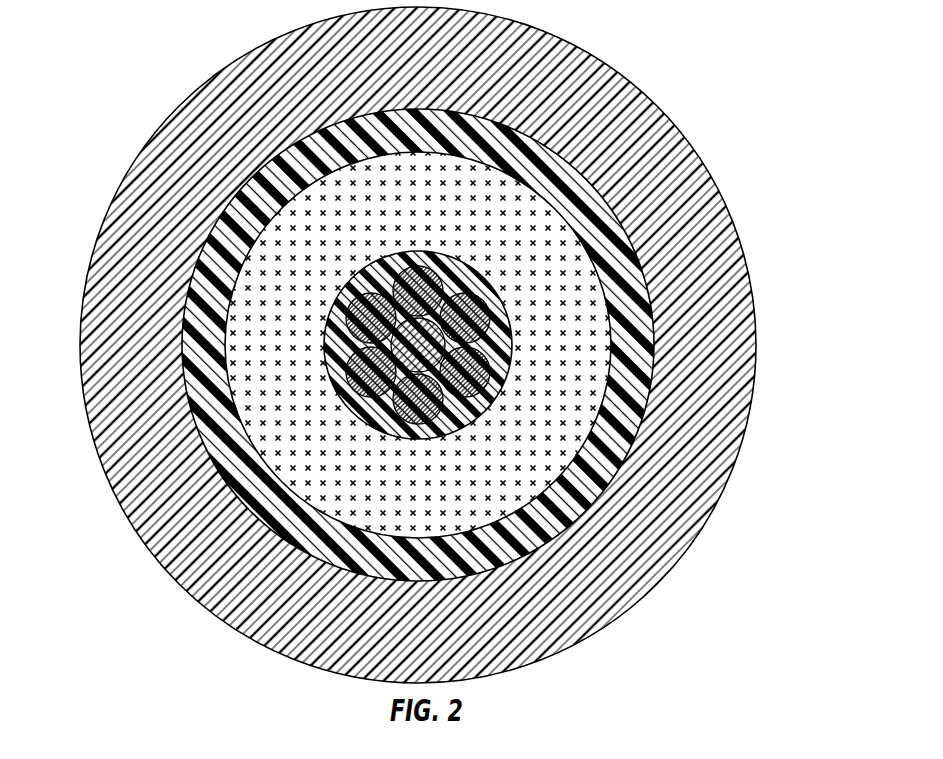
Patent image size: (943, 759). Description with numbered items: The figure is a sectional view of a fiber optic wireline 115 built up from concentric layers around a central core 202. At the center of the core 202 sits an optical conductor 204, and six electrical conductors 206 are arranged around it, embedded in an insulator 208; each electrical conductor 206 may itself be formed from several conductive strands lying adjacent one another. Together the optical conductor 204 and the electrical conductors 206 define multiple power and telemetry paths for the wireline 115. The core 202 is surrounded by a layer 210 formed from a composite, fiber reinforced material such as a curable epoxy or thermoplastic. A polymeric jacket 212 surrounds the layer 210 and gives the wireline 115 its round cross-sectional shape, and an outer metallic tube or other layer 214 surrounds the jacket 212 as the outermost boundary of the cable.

The wireline 115 is at (415, 350).
The core 202 is at (522, 320).
The optical conductor 204 is at (433, 320).
The electrical conductors 206 is at (350, 276).
The insulator 208 is at (478, 308).
The layer 210 is at (547, 462).
The polymeric jacket 212 is at (197, 433).
The outer metallic tube or other layer 214 is at (97, 282).